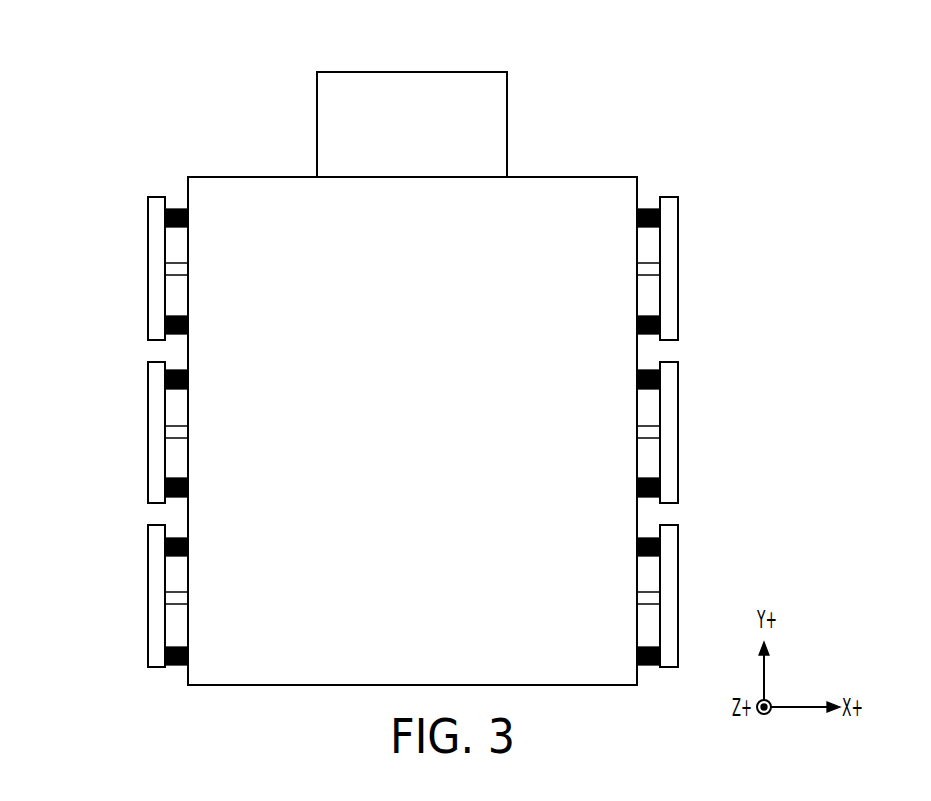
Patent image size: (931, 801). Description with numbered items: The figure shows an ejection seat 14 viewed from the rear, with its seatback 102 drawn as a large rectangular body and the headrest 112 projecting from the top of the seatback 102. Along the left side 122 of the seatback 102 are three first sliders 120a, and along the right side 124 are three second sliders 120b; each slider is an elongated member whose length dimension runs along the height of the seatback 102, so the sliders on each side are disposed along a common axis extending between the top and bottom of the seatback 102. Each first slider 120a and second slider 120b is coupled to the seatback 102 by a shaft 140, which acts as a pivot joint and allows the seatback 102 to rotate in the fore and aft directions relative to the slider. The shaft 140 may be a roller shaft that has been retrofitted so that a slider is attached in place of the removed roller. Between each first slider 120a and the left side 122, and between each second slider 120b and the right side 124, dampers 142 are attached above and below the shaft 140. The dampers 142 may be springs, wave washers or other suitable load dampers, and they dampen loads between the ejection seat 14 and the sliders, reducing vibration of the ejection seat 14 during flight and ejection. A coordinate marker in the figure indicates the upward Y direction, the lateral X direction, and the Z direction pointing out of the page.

The ejection seat 14 is at (148, 84).
The seatback 102 is at (405, 396).
The headrest 112 is at (427, 123).
The left side of seatback 122 is at (188, 194).
The right side of seatback 124 is at (637, 195).
The first sliders 120a is at (152, 272).
The second sliders 120b is at (668, 253).
The shaft 140 is at (188, 267).
The dampers 142 is at (188, 213).